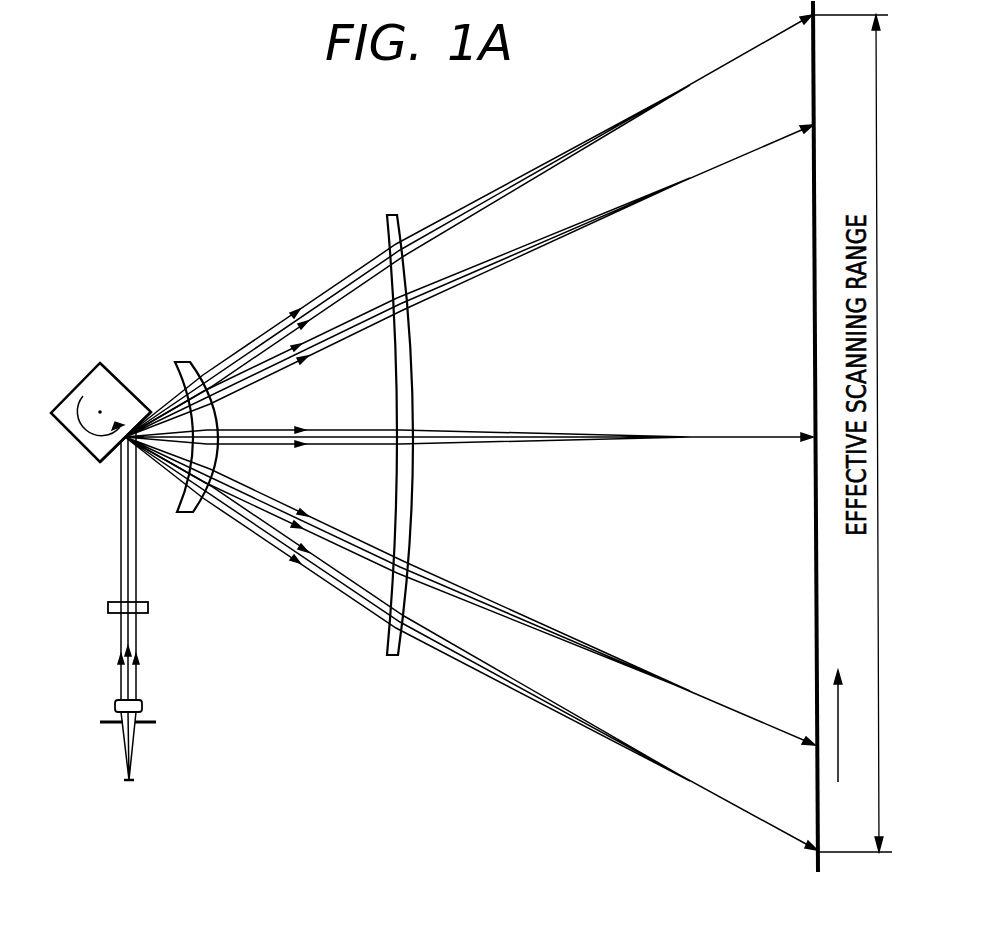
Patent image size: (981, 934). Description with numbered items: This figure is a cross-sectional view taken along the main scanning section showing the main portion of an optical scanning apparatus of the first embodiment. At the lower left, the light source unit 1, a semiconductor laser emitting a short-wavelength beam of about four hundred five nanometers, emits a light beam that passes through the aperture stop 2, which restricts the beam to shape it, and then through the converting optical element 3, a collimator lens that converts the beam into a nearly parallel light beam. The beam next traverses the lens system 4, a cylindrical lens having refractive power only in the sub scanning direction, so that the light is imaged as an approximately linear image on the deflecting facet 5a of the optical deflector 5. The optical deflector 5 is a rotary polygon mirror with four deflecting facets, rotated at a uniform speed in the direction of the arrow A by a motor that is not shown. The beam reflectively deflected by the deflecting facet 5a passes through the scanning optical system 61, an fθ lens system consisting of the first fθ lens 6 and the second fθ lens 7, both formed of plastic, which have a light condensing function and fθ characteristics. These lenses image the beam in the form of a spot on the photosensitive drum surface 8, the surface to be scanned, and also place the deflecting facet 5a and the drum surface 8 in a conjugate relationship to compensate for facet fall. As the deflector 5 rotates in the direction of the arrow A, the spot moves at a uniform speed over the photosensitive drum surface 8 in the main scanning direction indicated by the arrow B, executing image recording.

The light source unit 1 is at (134, 780).
The aperture stop 2 is at (158, 722).
The converting optical element 3 is at (144, 706).
The lens system 4 is at (149, 607).
The optical deflector 5 is at (86, 388).
The deflecting facet 5a is at (114, 455).
The first fθ lens 6 is at (182, 362).
The scanning optical system 61 is at (339, 177).
The second fθ lens 7 is at (387, 218).
The photosensitive drum surface 8 is at (815, 860).
The rotation direction of optical deflector A is at (79, 440).
The main scanning direction B is at (838, 712).